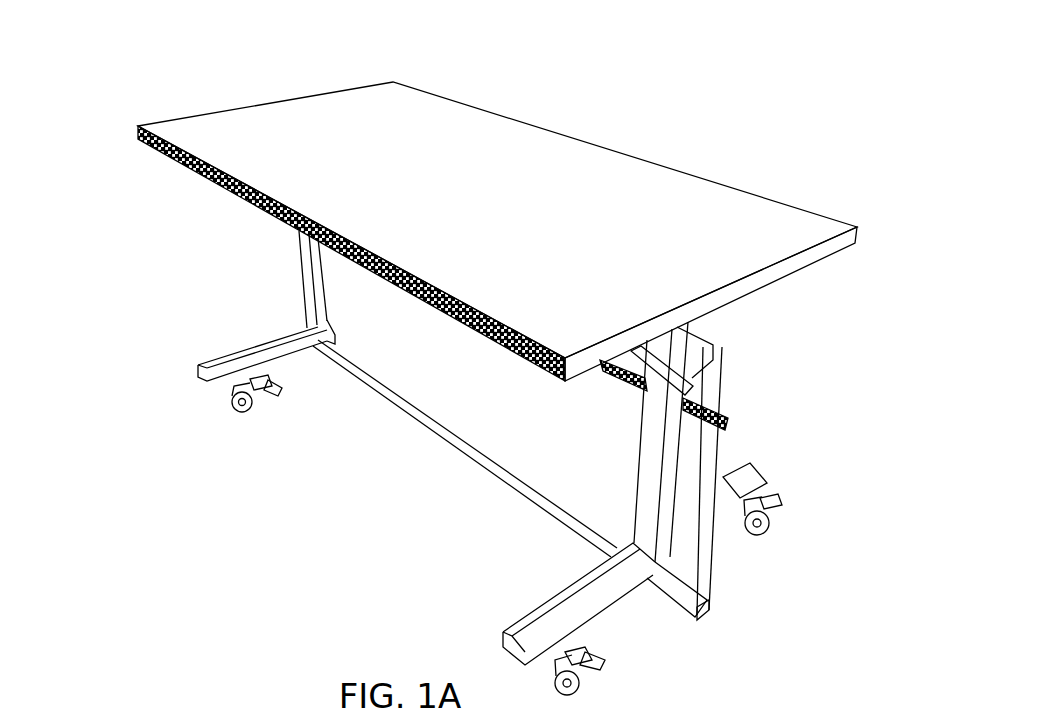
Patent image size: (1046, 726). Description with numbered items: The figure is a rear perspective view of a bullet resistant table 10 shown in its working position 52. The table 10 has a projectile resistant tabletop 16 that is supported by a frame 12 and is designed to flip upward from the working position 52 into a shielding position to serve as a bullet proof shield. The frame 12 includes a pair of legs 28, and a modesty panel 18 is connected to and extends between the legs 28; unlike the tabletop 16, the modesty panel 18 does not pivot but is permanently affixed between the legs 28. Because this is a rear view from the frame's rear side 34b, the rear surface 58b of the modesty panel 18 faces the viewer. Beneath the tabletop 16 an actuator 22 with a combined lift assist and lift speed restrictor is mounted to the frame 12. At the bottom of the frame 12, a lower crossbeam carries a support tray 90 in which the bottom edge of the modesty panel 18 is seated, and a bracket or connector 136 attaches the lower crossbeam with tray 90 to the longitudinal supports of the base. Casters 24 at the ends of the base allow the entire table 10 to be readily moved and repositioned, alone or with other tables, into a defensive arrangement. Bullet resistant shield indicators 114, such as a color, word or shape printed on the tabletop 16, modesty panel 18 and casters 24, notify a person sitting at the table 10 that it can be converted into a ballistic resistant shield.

The table 10 is at (80, 82).
The frame 12 is at (272, 272).
The projectile resistant tabletop 16 is at (527, 157).
The modesty panel 18 is at (460, 392).
The actuator 22 is at (656, 358).
The casters 24 is at (240, 405).
The legs 28 is at (305, 296).
The rear side 34b is at (295, 440).
The working position 52 is at (869, 158).
The rear surface 58b is at (540, 443).
The support tray 90 is at (493, 470).
The bullet resistant shield indicators 114 is at (208, 165).
The connector 136 is at (657, 572).